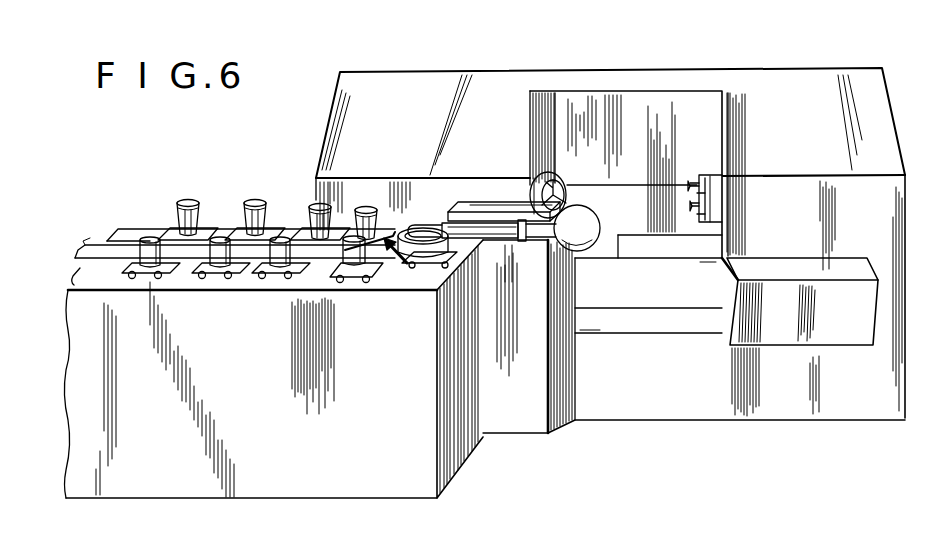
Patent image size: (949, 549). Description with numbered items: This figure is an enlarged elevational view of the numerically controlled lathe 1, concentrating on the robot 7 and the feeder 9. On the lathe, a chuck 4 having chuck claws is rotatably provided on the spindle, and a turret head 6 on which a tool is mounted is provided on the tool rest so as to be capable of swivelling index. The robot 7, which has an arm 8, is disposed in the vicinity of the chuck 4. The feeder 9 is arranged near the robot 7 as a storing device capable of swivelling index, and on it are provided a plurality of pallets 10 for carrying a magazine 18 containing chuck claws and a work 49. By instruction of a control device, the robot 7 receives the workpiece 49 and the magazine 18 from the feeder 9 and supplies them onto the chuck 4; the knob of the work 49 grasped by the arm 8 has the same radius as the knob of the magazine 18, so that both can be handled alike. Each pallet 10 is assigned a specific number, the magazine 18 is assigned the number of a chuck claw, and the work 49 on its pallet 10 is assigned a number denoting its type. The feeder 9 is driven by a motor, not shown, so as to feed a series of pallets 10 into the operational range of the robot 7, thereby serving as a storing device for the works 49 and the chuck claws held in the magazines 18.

The numerically controlled lathe 1 is at (903, 108).
The chuck 4 is at (560, 172).
The turret head 6 is at (696, 174).
The robot 7 is at (577, 367).
The arm 8 is at (507, 244).
The feeder 9 is at (143, 227).
The pallets 10 is at (208, 232).
The magazine 18 is at (403, 262).
The workpiece 49 is at (193, 200).